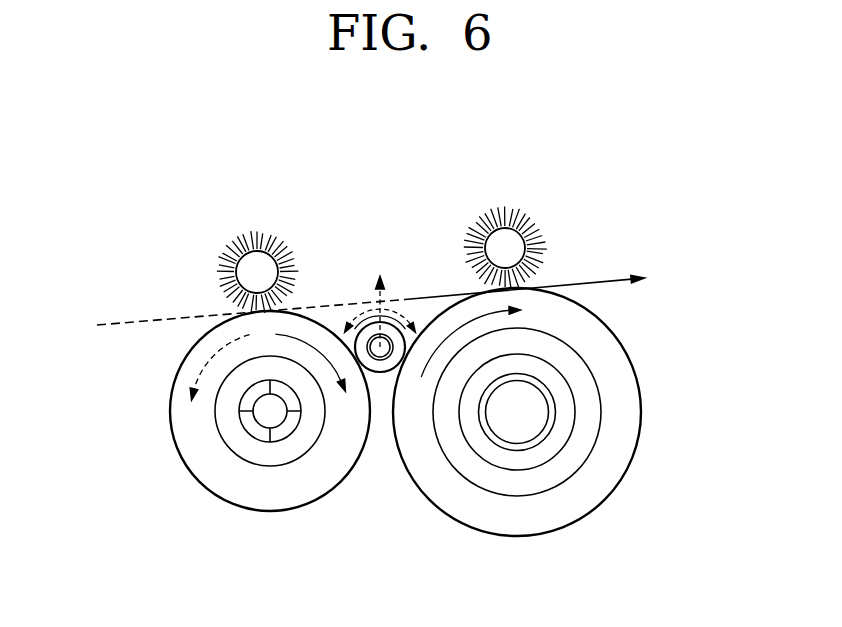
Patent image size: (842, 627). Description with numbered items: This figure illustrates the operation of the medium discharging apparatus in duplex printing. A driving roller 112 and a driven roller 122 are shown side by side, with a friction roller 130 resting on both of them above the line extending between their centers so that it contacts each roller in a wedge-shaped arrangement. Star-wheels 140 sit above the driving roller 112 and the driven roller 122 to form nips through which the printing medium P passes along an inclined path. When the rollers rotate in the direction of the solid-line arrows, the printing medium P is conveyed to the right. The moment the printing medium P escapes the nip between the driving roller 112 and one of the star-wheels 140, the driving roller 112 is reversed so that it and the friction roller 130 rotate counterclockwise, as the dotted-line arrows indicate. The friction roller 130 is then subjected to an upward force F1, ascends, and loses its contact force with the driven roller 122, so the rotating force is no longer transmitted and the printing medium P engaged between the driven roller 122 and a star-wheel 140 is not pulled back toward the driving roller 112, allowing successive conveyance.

The driving roller 112 is at (266, 505).
The driven roller 122 is at (462, 507).
The friction roller 130 is at (395, 323).
The star-wheel 140 is at (503, 212).
The printing medium P is at (602, 278).
The force F1 is at (381, 300).